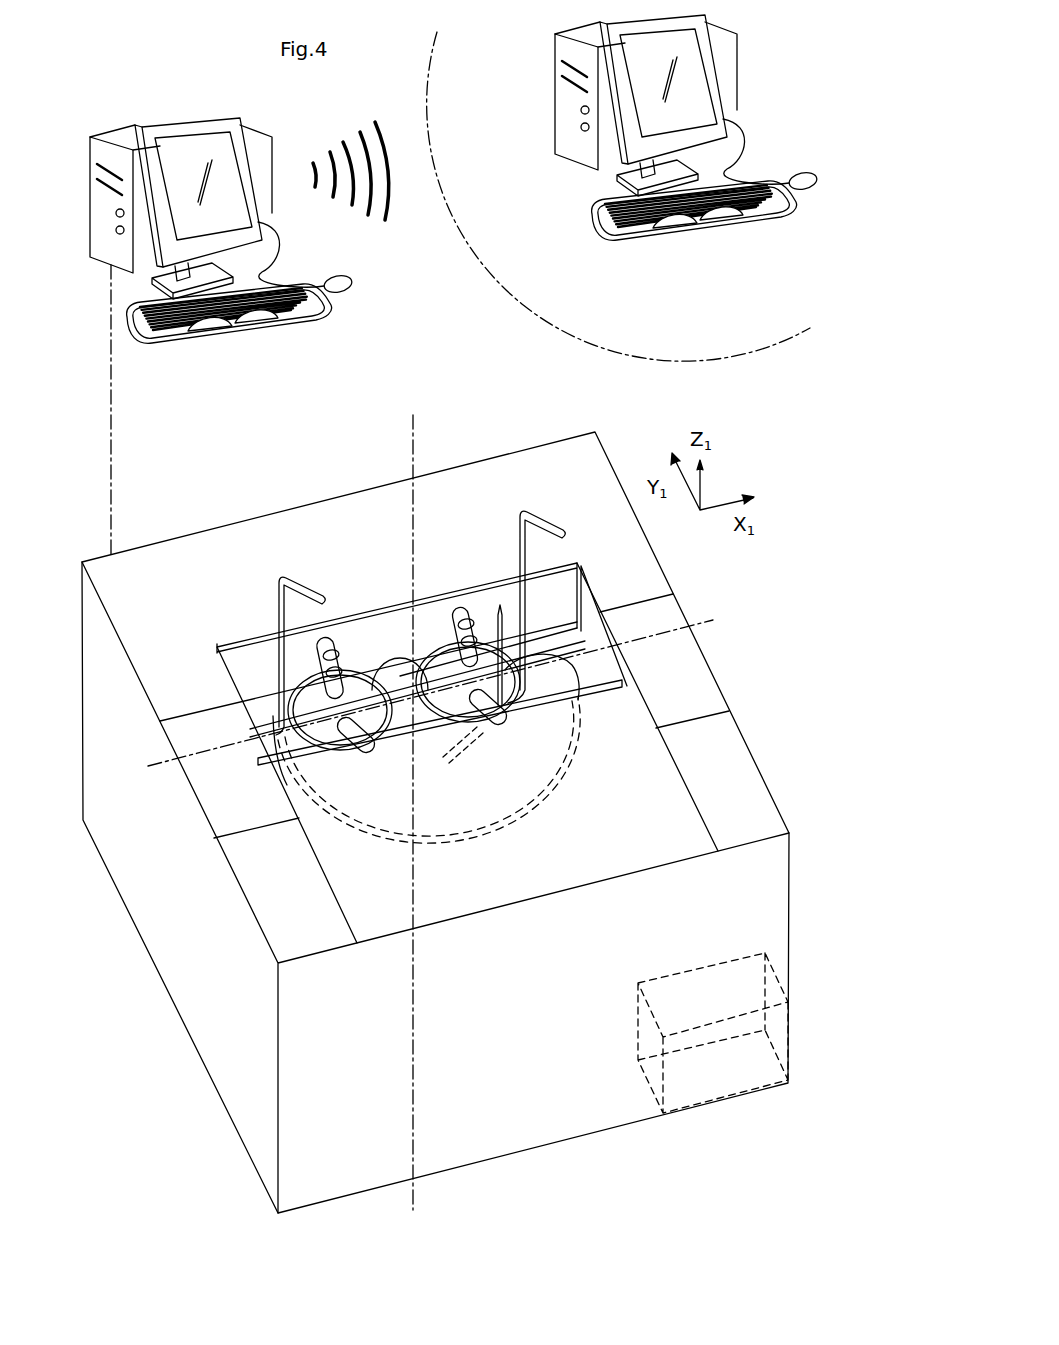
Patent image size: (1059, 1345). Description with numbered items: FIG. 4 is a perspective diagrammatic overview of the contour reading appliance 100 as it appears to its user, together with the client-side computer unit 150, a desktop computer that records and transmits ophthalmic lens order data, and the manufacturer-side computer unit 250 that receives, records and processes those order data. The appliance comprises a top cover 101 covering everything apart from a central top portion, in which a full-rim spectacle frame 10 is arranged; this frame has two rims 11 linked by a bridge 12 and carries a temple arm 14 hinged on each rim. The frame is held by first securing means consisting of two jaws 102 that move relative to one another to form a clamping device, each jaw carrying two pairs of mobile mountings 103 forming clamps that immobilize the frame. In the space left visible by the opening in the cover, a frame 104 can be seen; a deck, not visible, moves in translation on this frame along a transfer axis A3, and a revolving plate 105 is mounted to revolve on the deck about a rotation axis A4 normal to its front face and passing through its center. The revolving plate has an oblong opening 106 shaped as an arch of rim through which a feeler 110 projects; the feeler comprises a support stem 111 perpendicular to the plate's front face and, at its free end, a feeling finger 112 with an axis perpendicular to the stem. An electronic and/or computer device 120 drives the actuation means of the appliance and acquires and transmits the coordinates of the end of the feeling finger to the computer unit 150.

The computer unit 150 is at (122, 120).
The computer unit 250 is at (572, 192).
The contour reading appliance 100 is at (236, 500).
The top cover 101 is at (730, 730).
The jaws 102 is at (232, 642).
The mobile mountings 103 is at (325, 677).
The frame 104 is at (567, 680).
The revolving plate 105 is at (270, 757).
The oblong opening 106 is at (488, 758).
The feeler 110 is at (580, 562).
The support stem 111 is at (497, 712).
The feeling finger 112 is at (497, 605).
The electronic and/or computer device 120 is at (733, 1078).
The full-rim spectacle frame 10 is at (432, 742).
The rims 11 is at (316, 742).
The bridge 12 is at (400, 660).
The temple arm 14 is at (278, 577).
The transfer axis A3 is at (150, 768).
The rotation axis A4 is at (410, 442).